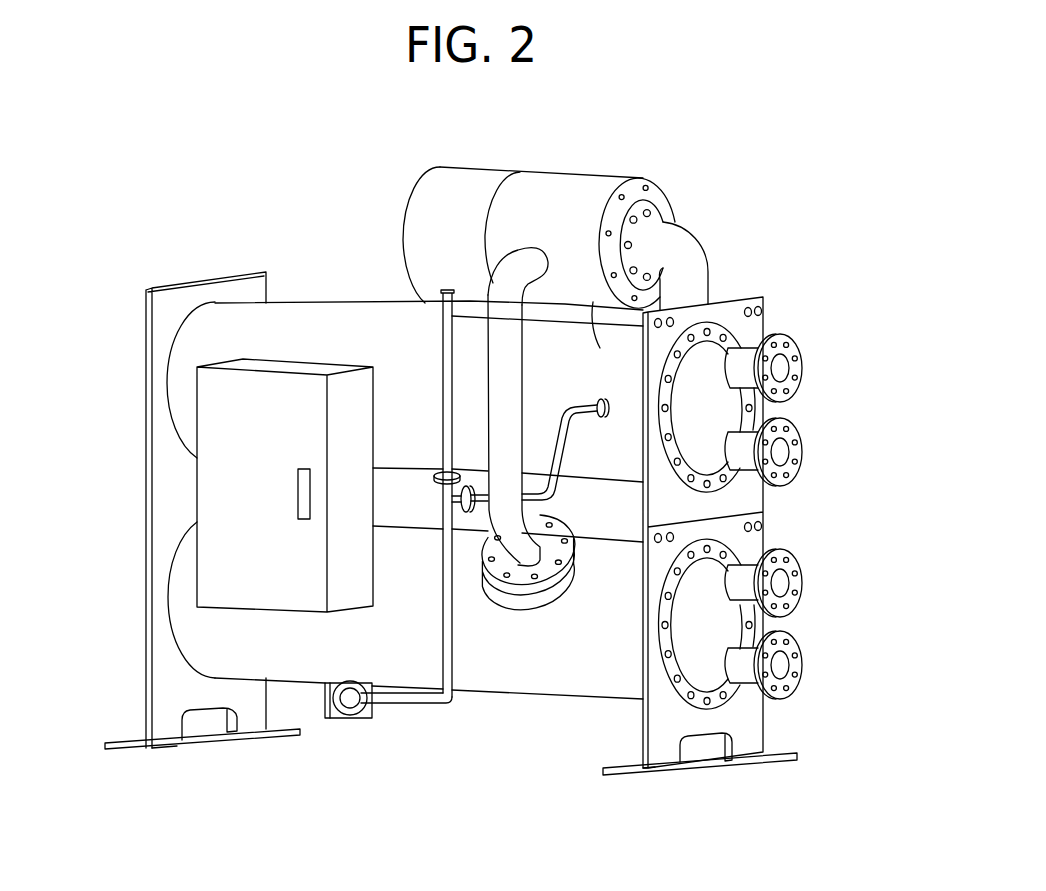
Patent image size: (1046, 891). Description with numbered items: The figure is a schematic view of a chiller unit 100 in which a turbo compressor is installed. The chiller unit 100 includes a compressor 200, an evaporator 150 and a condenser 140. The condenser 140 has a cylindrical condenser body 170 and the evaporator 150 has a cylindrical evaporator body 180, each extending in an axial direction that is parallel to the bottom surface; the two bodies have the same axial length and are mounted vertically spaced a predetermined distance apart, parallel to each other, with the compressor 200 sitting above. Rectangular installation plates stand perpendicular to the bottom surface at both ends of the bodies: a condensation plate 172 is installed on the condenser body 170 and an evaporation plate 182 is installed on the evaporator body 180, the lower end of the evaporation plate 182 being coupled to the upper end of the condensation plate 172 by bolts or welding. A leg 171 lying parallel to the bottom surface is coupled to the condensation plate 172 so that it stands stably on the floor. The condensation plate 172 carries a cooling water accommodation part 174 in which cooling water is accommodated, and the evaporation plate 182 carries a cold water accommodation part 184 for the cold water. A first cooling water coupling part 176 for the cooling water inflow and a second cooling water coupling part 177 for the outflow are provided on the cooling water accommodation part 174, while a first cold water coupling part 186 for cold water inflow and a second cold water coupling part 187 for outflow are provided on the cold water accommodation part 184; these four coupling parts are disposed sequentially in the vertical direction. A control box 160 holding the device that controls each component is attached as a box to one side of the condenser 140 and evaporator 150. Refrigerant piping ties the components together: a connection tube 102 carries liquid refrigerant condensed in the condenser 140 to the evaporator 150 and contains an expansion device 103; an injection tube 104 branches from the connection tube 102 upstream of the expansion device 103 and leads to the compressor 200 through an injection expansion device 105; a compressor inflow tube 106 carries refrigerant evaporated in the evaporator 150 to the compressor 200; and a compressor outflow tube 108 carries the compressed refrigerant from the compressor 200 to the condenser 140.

The chiller unit 100 is at (140, 110).
The compressor 200 is at (667, 170).
The evaporator body 180 is at (634, 178).
The compressor inflow tube 106 is at (688, 247).
The cold water accommodation part 184 is at (712, 365).
The evaporation plate 182 is at (167, 312).
The first cold water coupling part 186 is at (783, 367).
The second cold water coupling part 187 is at (783, 452).
The evaporator 150 is at (826, 421).
The condenser 140 is at (826, 623).
The first cooling water coupling part 176 is at (783, 583).
The second cooling water coupling part 177 is at (783, 665).
The condenser body 170 is at (537, 683).
The control box 160 is at (207, 487).
The condensation plate 172 is at (167, 682).
The leg 171 is at (208, 737).
The cooling water accommodation part 174 is at (713, 682).
The injection tube 104 is at (500, 375).
The compressor outflow tube 108 is at (443, 313).
The injection expansion device 105 is at (443, 476).
The expansion device 103 is at (455, 500).
The connection tube 102 is at (423, 703).